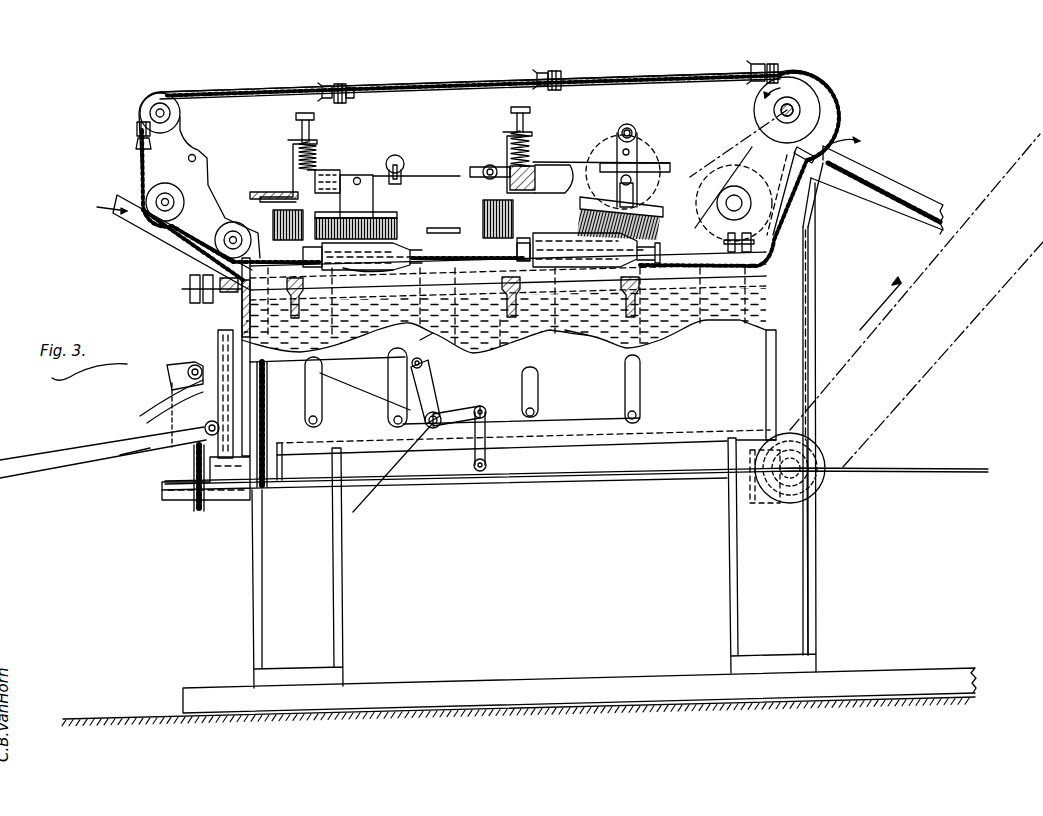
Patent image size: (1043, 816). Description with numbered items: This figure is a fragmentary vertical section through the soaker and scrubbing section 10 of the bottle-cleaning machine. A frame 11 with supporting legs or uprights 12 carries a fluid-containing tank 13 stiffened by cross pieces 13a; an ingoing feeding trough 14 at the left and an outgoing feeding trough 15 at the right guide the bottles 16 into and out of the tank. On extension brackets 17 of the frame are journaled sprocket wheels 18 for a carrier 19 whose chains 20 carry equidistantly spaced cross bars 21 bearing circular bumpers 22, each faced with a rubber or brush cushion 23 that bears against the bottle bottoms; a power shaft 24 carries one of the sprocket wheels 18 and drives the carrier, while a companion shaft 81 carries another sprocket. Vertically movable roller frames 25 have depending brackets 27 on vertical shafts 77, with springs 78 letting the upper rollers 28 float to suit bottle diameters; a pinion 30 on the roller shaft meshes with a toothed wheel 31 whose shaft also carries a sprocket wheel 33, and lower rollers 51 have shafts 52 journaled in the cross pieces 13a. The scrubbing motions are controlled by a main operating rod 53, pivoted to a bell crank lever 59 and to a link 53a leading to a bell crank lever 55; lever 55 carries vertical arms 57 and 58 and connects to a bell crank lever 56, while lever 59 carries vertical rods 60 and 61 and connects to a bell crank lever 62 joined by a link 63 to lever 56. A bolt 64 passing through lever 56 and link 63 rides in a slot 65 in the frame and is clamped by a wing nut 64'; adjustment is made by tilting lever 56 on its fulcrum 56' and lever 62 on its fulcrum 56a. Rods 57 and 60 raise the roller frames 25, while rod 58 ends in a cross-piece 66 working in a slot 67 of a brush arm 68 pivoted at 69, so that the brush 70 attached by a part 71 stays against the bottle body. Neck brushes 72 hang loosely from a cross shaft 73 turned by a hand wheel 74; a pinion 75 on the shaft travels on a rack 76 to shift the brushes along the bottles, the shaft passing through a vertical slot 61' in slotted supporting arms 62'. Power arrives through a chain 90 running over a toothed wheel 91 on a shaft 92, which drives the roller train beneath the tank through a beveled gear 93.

The soaker and scrubbing section 10 is at (489, 153).
The frame 11 is at (810, 333).
The supporting legs or uprights 12 is at (343, 558).
The tank 13 is at (509, 366).
The cross pieces 13a is at (658, 300).
The ingoing feeding trough 14 is at (160, 237).
The outgoing feeding trough 15 is at (877, 185).
The bottles 16 is at (363, 270).
The extension brackets 17 is at (205, 170).
The sprocket wheels 18 is at (182, 117).
The carrier 19 is at (405, 83).
The chains 20 is at (644, 78).
The cross bars 21 is at (356, 96).
The bumpers 22 is at (137, 126).
The cushion 23 is at (137, 143).
The power shaft 24 is at (800, 110).
The roller frames 25 is at (298, 162).
The brackets 27 is at (538, 226).
The upper rollers 28 is at (563, 228).
The pinion 30 is at (510, 282).
The toothed wheel 31 is at (278, 190).
The sprocket wheel 33 is at (273, 218).
The lower rollers 51 is at (414, 324).
The shafts 52 is at (226, 338).
The main operating rod 53 is at (969, 474).
The link 53a is at (446, 480).
The bell crank lever 55 is at (300, 496).
The bell crank lever 56 is at (109, 446).
The fulcrum 56' is at (143, 460).
The fulcrum 56a is at (390, 469).
The vertical arm 57 is at (322, 392).
The vertical arm 58 is at (437, 380).
The bell crank lever 59 is at (496, 450).
The vertical rod 60 is at (540, 382).
The vertical rod 61 is at (647, 389).
The vertical slot 61' is at (643, 129).
The bell crank lever 62 is at (458, 405).
The slotted supporting arms 62' is at (641, 110).
The link 63 is at (390, 362).
The bolt 64 is at (168, 413).
The wing nut 64' is at (187, 354).
The slot 65 is at (186, 372).
The cross-piece 66 is at (400, 165).
The slot 67 is at (393, 155).
The brush arm 68 is at (330, 172).
The pivot 69 is at (489, 165).
The brush 70 is at (398, 204).
The part 71 is at (365, 177).
The brushes 72 is at (650, 203).
The cross shaft 73 is at (652, 160).
The hand wheel 74 is at (640, 170).
The pinion 75 is at (672, 185).
The rack 76 is at (590, 168).
The vertical shafts 77 is at (536, 112).
The springs 78 is at (537, 145).
The shaft 81 is at (734, 208).
The chain 90 is at (920, 386).
The toothed wheel 91 is at (825, 480).
The shaft 92 is at (827, 449).
The beveled gear 93 is at (767, 506).